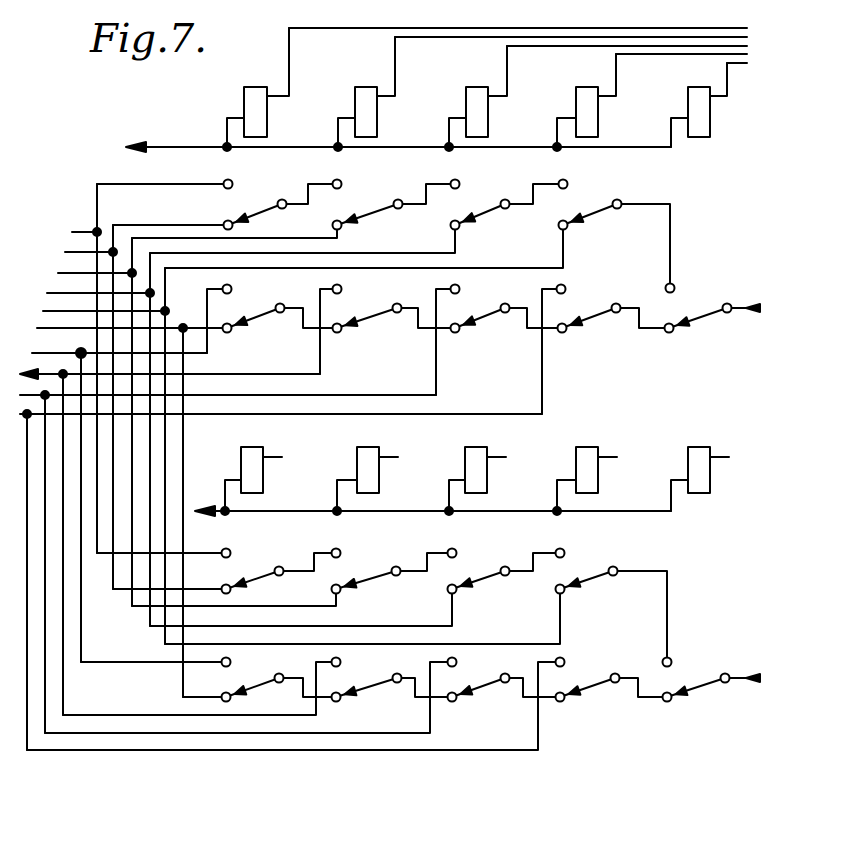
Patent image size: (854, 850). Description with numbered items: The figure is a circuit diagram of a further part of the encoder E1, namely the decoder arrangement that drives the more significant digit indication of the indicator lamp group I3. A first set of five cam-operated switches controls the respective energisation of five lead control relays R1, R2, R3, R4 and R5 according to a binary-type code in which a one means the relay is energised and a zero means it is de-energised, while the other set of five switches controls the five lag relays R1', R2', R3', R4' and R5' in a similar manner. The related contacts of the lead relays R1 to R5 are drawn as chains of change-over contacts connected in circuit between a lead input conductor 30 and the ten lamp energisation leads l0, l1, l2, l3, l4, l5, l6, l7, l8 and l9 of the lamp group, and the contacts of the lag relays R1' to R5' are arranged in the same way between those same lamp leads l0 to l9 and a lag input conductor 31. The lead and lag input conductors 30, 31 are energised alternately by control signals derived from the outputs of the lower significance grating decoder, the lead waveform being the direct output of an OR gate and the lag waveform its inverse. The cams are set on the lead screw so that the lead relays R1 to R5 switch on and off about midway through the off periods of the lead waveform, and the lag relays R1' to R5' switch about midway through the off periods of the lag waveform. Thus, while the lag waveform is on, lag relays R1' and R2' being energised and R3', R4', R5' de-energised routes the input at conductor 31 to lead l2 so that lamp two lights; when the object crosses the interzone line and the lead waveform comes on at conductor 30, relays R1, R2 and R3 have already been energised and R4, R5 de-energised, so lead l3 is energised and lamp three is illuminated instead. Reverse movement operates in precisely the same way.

The lead control relay R1 is at (709, 105).
The lead control relay R2 is at (594, 102).
The lead control relay R3 is at (485, 98).
The lead control relay R4 is at (374, 94).
The lead control relay R5 is at (264, 89).
The lag relay R1' is at (711, 479).
The lag relay R2' is at (596, 481).
The lag relay R3' is at (487, 481).
The lag relay R4' is at (377, 481).
The lag relay R5' is at (265, 481).
The lamp energisation lead l0 is at (42, 328).
The lamp energisation lead l1 is at (50, 311).
The lamp energisation lead l2 is at (54, 293).
The lamp energisation lead l3 is at (64, 273).
The lamp energisation lead l4 is at (72, 252).
The lamp energisation lead l5 is at (80, 232).
The lamp energisation lead l6 is at (492, 414).
The lamp energisation lead l7 is at (382, 395).
The lamp energisation lead l8 is at (258, 374).
The lamp energisation lead l9 is at (40, 353).
The lead input conductor 30 is at (741, 304).
The lag input conductor 31 is at (733, 674).